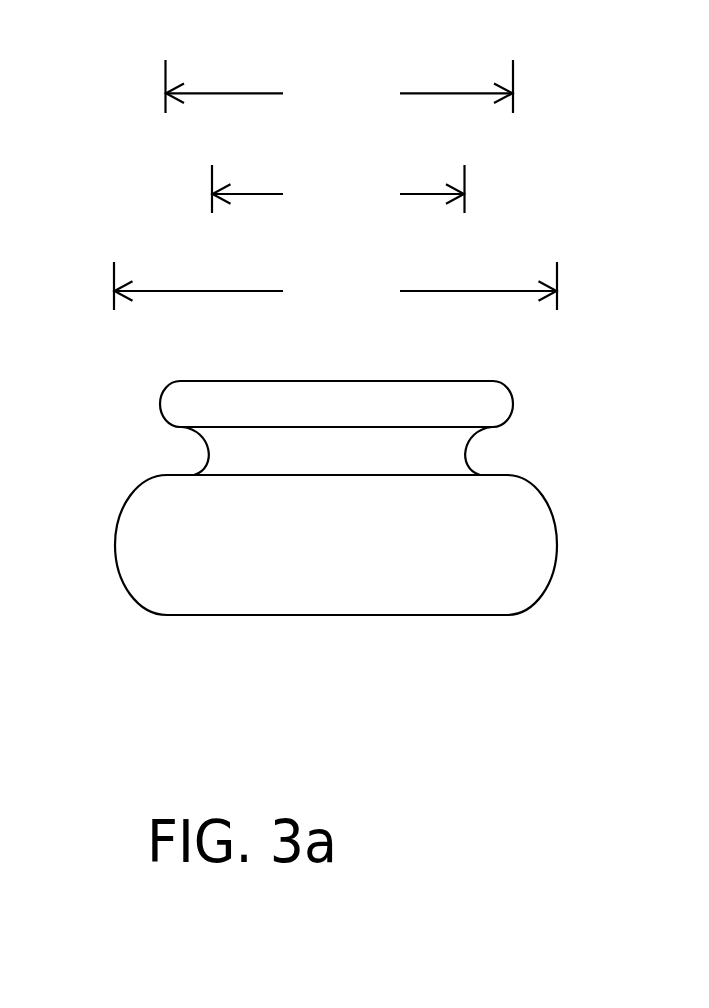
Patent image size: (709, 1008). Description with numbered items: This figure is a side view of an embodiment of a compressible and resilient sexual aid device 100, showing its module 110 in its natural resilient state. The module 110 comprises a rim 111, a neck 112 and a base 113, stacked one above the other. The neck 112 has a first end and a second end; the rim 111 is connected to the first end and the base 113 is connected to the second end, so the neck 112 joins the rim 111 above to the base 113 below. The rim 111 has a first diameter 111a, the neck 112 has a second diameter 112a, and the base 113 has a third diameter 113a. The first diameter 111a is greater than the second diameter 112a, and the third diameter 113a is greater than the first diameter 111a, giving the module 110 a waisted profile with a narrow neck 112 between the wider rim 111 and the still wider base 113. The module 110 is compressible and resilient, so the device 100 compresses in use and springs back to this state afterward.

The compressible and resilient sexual aid device 100 is at (116, 653).
The module 110 is at (202, 538).
The rim 111 is at (482, 408).
The neck 112 is at (388, 453).
The base 113 is at (468, 588).
The first diameter 111a is at (340, 91).
The second diameter 112a is at (338, 194).
The third diameter 113a is at (335, 291).